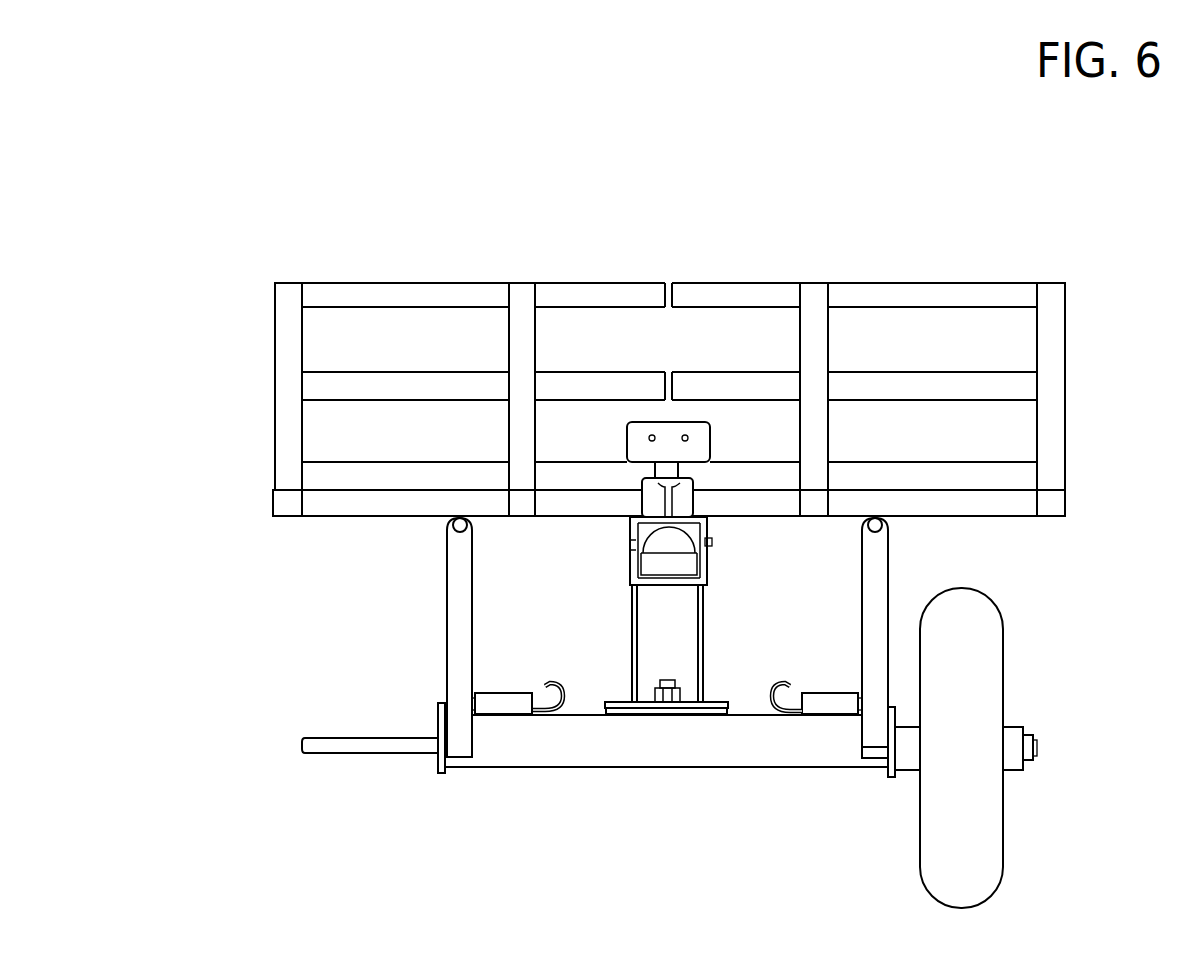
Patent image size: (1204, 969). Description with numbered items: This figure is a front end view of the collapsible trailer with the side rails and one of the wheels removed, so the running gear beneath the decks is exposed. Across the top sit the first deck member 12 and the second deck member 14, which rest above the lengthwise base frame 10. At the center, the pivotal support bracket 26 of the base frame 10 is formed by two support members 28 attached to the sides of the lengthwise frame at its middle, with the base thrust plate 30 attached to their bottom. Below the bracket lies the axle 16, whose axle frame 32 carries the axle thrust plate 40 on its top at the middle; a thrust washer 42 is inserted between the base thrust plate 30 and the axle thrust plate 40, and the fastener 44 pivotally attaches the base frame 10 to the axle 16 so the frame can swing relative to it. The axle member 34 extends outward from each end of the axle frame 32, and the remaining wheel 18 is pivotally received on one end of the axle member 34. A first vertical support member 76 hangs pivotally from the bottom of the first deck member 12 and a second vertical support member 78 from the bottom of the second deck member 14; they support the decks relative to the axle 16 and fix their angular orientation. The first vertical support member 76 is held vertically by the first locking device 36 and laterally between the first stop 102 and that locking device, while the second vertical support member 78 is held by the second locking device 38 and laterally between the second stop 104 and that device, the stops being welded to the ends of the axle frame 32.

The lengthwise base frame 10 is at (633, 531).
The first deck member 12 is at (320, 518).
The second deck member 14 is at (1020, 520).
The axle 16 is at (633, 757).
The wheel 18 is at (975, 823).
The pivotal support bracket 26 is at (712, 631).
The support member 28 is at (632, 628).
The base thrust plate 30 is at (605, 700).
The axle frame 32 is at (695, 748).
The axle member 34 is at (298, 745).
The first locking device 36 is at (512, 703).
The second locking device 38 is at (815, 705).
The axle thrust plate 40 is at (615, 716).
The thrust washer 42 is at (700, 708).
The fastener 44 is at (672, 680).
The first vertical support member 76 is at (445, 598).
The second vertical support member 78 is at (893, 588).
The first stop 102 is at (433, 763).
The second stop 104 is at (894, 778).